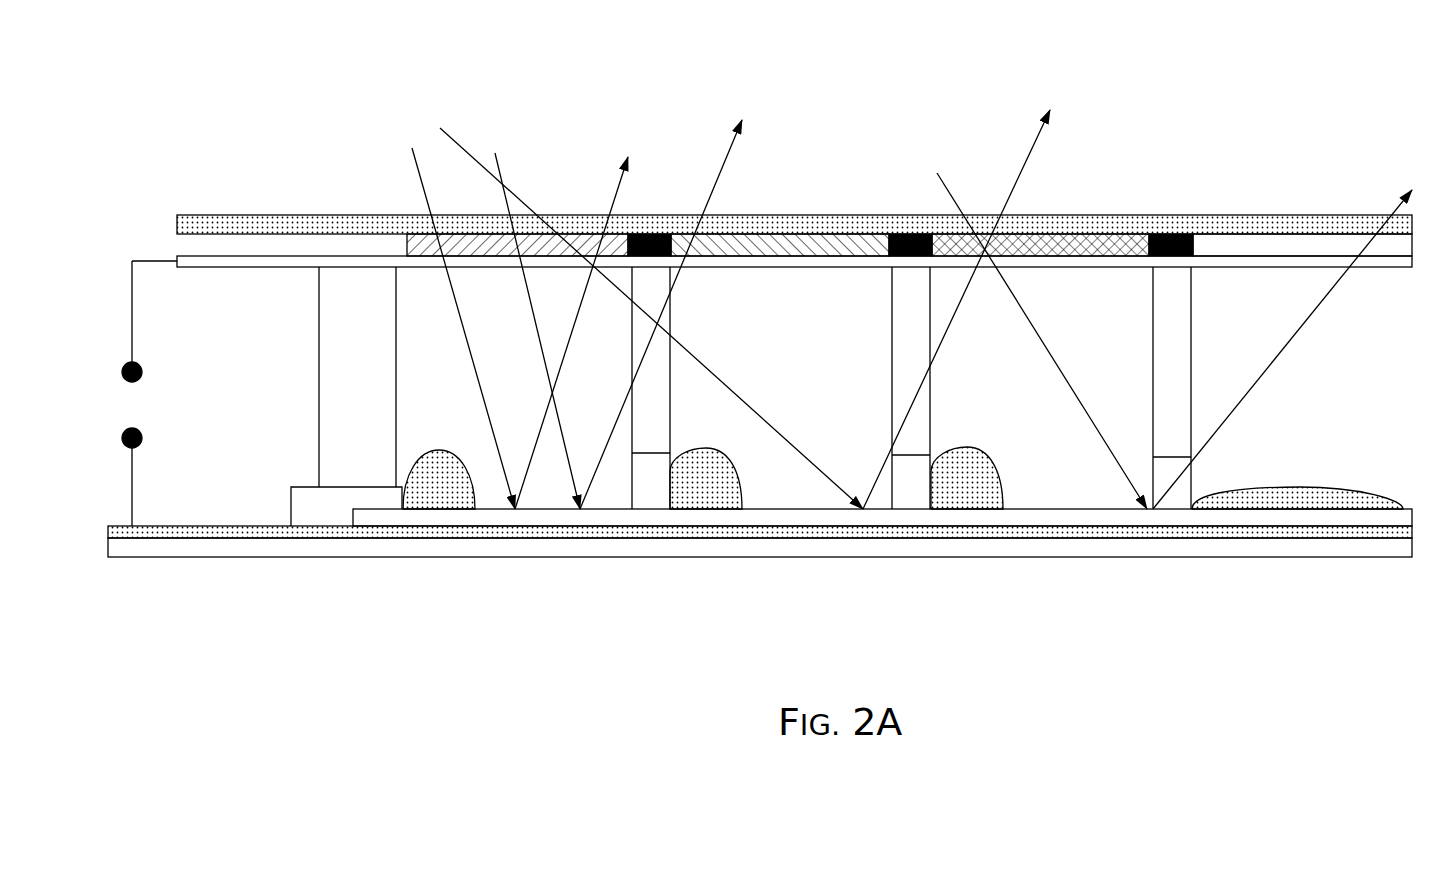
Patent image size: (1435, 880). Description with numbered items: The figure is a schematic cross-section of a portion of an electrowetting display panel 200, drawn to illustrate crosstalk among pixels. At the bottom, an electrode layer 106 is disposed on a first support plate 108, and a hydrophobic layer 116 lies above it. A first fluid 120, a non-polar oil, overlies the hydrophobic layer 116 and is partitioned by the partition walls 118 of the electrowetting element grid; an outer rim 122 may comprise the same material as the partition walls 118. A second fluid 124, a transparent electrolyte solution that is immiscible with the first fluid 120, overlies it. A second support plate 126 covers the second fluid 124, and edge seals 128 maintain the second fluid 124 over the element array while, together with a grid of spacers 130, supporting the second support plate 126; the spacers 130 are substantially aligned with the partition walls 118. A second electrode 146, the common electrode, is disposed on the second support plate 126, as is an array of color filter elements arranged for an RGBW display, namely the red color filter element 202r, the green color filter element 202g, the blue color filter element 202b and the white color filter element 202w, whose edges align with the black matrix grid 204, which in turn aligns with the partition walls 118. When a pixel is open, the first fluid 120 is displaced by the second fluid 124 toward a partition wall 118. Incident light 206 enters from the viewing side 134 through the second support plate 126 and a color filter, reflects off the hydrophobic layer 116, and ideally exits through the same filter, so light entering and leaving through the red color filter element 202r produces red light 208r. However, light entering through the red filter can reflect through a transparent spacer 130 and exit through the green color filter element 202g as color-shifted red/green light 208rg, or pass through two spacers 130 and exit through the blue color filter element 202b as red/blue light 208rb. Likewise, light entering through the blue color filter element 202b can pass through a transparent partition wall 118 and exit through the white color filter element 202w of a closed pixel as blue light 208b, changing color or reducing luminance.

The electrowetting display panel 200 is at (1213, 100).
The second support plate 126 is at (200, 215).
The red color filter element 202r is at (448, 248).
The green color filter element 202g is at (863, 256).
The blue color filter element 202b is at (1112, 250).
The white color filter element 202w is at (1224, 248).
The black matrix grid 204 is at (645, 218).
The second electrode 146 is at (1392, 268).
The edge seals 128 is at (319, 360).
The outer rim 122 is at (291, 490).
The second fluid 124 is at (535, 367).
The spacers 130 is at (668, 390).
The first fluid 120 is at (433, 450).
The hydrophobic layer 116 is at (1358, 512).
The partition walls 118 is at (653, 494).
The electrode layer 106 is at (1300, 533).
The first support plate 108 is at (1383, 557).
The incident light 206 is at (417, 168).
The viewing side 134 is at (435, 160).
The red light 208r is at (633, 169).
The red/green light 208rg is at (748, 125).
The red/blue light 208rb is at (1053, 118).
The reflected blue light 208b is at (1308, 338).